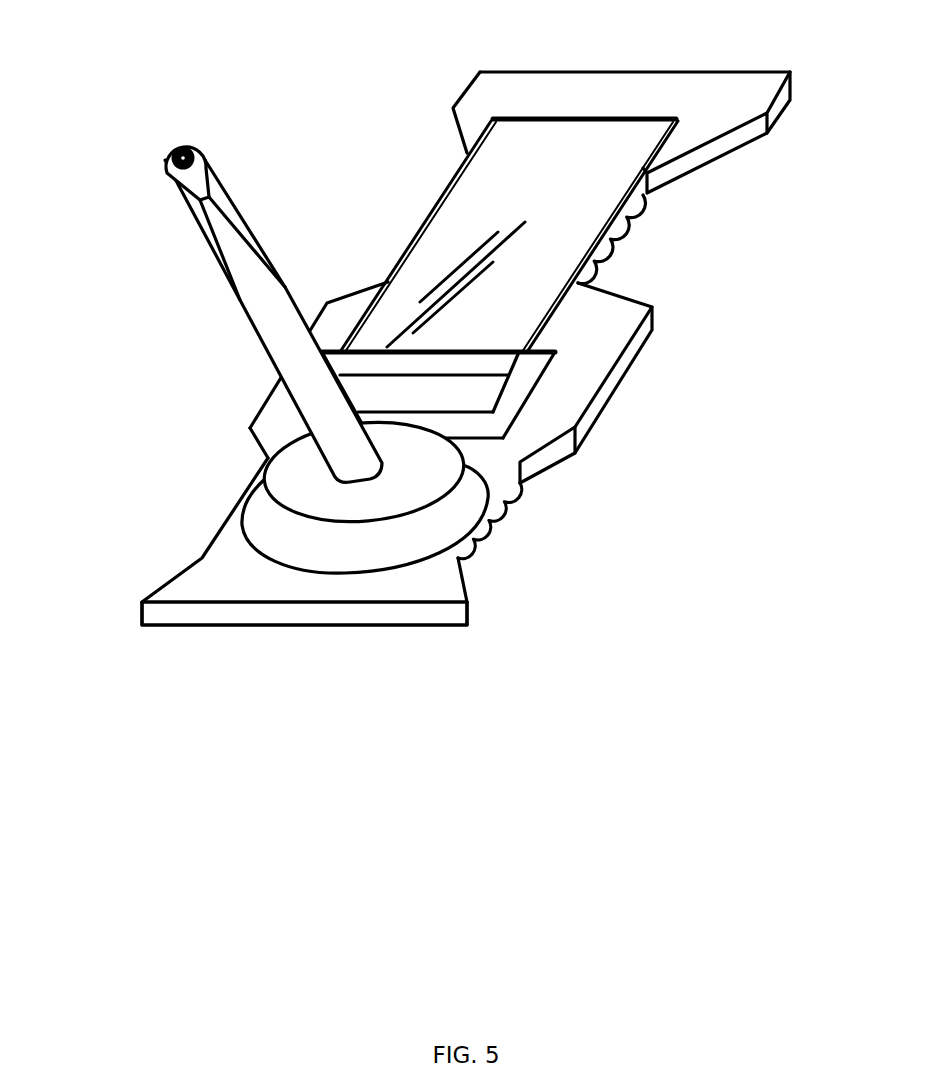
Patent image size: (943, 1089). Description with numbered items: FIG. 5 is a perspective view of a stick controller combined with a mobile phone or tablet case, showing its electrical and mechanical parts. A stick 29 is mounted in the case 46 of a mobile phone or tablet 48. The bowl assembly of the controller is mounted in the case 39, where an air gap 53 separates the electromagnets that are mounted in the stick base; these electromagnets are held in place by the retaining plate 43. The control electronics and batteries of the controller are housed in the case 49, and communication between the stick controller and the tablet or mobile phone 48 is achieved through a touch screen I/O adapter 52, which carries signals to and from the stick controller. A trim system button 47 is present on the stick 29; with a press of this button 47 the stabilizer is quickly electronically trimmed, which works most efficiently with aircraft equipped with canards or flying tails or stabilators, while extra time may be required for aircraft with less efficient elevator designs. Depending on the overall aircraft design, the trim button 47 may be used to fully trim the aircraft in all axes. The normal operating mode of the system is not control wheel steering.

The stick 29 is at (303, 368).
The case 39 is at (413, 580).
The retaining plate 43 is at (420, 467).
The case 46 is at (510, 100).
The trim system button 47 is at (172, 148).
The mobile phone or tablet 48 is at (452, 228).
The case 49 is at (592, 330).
The touch screen I/O adapter 52 is at (433, 358).
The air gap 53 is at (280, 545).